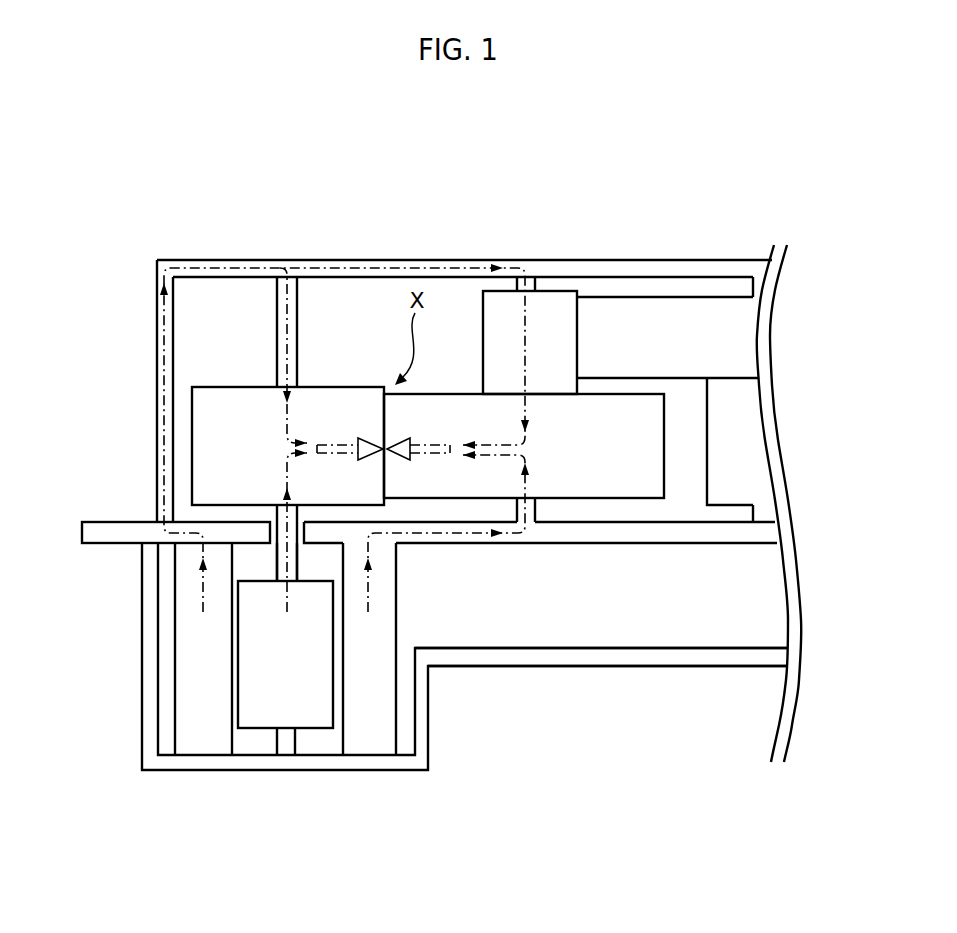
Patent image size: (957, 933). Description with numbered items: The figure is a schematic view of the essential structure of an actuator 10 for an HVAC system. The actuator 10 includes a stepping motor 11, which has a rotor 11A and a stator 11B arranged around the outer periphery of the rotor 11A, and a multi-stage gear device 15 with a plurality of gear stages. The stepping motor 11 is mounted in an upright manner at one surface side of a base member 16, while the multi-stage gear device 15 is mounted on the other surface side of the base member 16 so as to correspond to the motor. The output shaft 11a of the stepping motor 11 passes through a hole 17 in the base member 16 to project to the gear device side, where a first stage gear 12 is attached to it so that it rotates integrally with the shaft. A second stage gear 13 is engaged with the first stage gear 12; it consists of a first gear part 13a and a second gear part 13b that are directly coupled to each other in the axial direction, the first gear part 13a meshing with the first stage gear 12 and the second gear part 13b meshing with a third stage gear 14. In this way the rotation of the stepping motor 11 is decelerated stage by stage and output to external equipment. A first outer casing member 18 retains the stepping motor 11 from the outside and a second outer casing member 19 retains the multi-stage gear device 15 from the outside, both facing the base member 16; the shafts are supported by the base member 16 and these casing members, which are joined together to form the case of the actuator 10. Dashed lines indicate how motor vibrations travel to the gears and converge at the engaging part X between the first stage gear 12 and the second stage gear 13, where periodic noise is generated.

The actuator 10 is at (482, 197).
The stepping motor 11 is at (264, 711).
The rotor 11A is at (313, 722).
The stator 11B is at (367, 745).
The output shaft 11a is at (284, 560).
The first stage gear 12 is at (338, 397).
The second stage gear 13 is at (535, 384).
The first gear part 13a is at (606, 410).
The second gear part 13b is at (553, 305).
The third stage gear 14 is at (703, 315).
The multi-stage gear device 15 is at (627, 520).
The base member 16 is at (724, 543).
The hole 17 is at (269, 533).
The first outer casing member 18 is at (533, 658).
The second outer casing member 19 is at (333, 262).